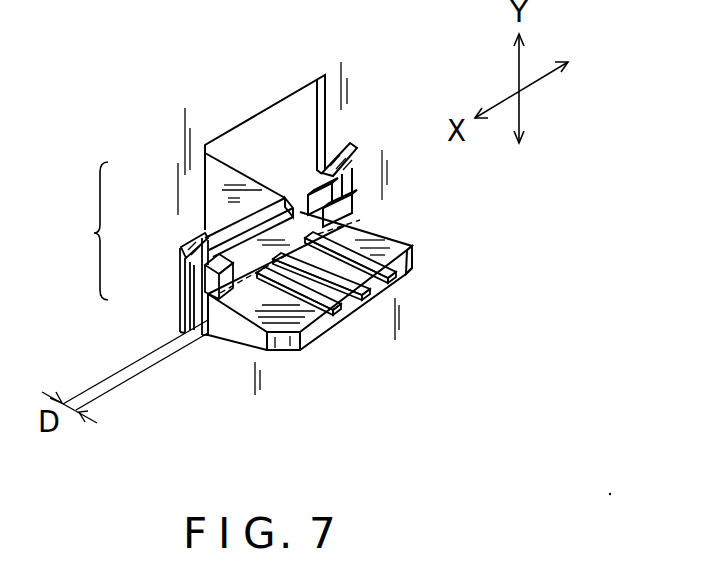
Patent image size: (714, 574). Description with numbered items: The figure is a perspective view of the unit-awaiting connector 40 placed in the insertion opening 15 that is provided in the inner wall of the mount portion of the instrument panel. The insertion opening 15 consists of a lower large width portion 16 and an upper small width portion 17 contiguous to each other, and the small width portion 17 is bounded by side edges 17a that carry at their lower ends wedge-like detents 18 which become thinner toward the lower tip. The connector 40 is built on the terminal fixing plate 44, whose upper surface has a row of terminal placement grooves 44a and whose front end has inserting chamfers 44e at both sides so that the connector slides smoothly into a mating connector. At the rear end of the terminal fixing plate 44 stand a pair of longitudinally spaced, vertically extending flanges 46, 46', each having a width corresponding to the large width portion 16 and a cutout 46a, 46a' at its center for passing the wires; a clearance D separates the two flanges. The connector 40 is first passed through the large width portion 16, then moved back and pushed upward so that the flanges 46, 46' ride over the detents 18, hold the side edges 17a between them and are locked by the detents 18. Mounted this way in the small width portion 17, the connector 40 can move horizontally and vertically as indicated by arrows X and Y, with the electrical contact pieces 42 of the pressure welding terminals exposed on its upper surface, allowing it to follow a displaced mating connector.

The insertion opening 15 is at (85, 231).
The large width portion 16 is at (183, 292).
The small width portion 17 is at (210, 183).
The side edges 17a is at (202, 167).
The detent 18 is at (355, 152).
The unit-awaiting connector 40 is at (291, 365).
The electrical contact pieces 42 is at (355, 263).
The terminal fixing plate 44 is at (376, 307).
The terminal placement grooves 44a is at (333, 313).
The inserting chamfers 44e is at (427, 262).
The flange 46 is at (161, 295).
The flange 46' is at (194, 376).
The cutout 46a is at (238, 158).
The cutout 46a' is at (254, 143).